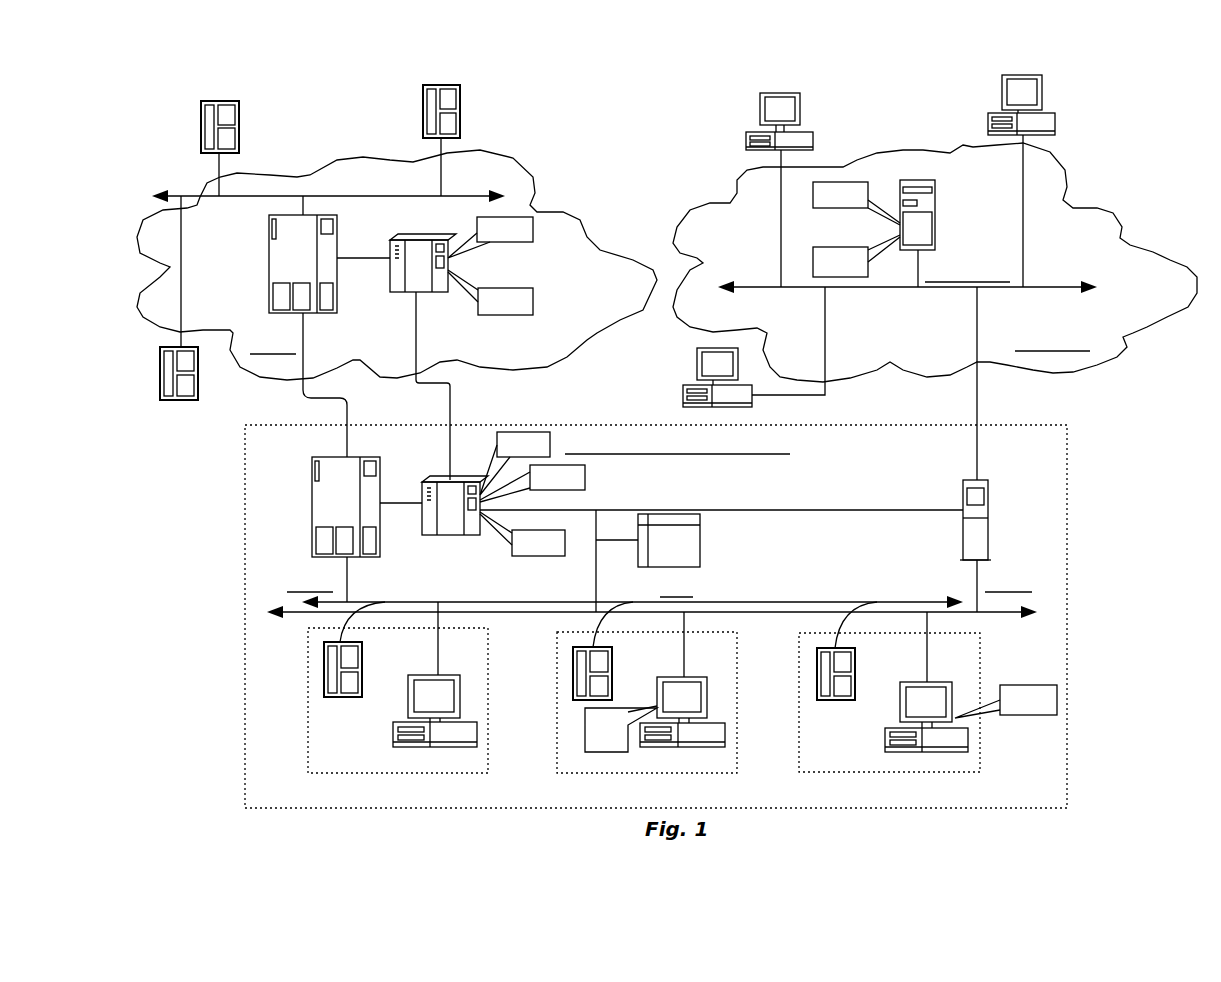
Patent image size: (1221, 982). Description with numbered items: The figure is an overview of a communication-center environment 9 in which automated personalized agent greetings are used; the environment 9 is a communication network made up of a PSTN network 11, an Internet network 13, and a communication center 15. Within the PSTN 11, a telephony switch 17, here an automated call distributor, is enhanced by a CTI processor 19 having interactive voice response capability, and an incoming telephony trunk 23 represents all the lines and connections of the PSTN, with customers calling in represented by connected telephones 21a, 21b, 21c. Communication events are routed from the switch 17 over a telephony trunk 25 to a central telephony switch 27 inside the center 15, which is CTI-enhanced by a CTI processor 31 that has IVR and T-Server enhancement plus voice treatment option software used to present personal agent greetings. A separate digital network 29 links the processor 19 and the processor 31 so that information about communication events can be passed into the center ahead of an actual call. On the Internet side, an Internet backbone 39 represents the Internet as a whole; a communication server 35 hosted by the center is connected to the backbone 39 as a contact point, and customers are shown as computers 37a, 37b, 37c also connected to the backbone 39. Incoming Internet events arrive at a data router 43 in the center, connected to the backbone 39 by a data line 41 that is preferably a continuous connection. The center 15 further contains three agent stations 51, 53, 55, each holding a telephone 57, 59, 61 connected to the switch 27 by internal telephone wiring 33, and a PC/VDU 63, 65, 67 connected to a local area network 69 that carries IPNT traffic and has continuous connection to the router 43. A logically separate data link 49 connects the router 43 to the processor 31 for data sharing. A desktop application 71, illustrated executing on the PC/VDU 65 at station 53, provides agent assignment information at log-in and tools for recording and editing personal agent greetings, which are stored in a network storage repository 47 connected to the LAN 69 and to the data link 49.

The communication-center environment 9 is at (607, 138).
The PSTN network 11 is at (277, 173).
The Internet network 13 is at (960, 140).
The communication center 15 is at (1078, 596).
The telephony switch 17 is at (269, 275).
The CTI processor 19 is at (400, 292).
The telephone 21a is at (160, 385).
The telephone 21b is at (201, 145).
The telephone 21c is at (423, 125).
The incoming telephony trunk 23 is at (193, 195).
The telephony trunk 25 is at (347, 440).
The central telephony switch 27 is at (312, 530).
The digital network 29 is at (450, 450).
The CTI processor 31 is at (448, 535).
The internal telephone wiring 33 is at (440, 600).
The communication server 35 is at (938, 215).
The computer 37a is at (683, 395).
The computer 37b is at (813, 140).
The computer 37c is at (1055, 122).
The Internet backbone 39 is at (930, 300).
The data line 41 is at (975, 442).
The data router 43 is at (988, 515).
The network storage repository 47 is at (700, 540).
The data link 49 is at (708, 508).
The agent station 51 is at (397, 770).
The agent station 53 is at (645, 777).
The agent station 55 is at (917, 772).
The telephone 57 is at (363, 687).
The telephone 59 is at (612, 688).
The telephone 61 is at (857, 682).
The PC/VDU 63 is at (408, 700).
The PC/VDU 65 is at (690, 677).
The PC/VDU 67 is at (900, 705).
The local area network 69 is at (997, 612).
The desktop application 71 is at (585, 740).